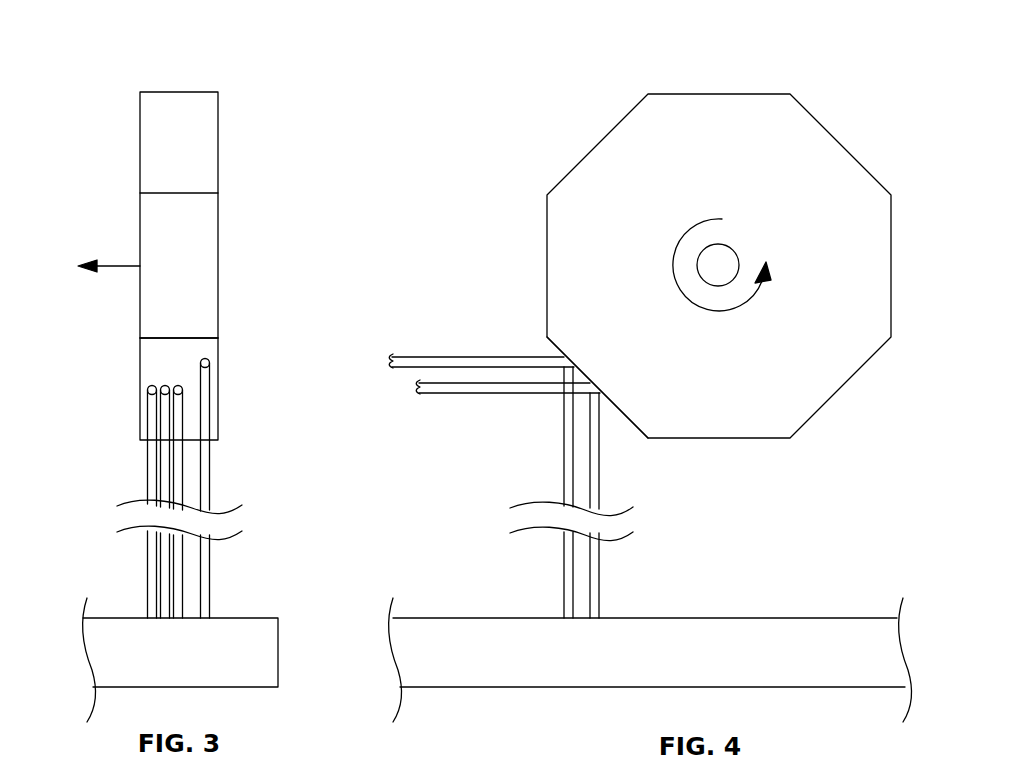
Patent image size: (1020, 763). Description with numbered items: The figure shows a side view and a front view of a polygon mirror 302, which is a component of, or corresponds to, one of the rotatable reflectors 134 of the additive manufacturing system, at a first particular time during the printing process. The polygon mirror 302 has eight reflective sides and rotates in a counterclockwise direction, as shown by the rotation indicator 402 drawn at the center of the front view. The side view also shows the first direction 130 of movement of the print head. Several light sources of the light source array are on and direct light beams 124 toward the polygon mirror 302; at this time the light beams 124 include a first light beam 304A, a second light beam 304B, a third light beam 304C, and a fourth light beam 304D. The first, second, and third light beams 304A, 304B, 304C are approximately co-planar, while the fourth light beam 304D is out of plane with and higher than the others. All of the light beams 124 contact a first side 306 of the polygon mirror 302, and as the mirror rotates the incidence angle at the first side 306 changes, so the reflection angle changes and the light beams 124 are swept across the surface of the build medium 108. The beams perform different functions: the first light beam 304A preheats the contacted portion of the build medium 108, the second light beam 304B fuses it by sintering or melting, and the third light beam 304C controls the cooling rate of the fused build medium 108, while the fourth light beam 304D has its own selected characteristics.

In FIG. 3, the rotatable reflector 134 is at (252, 62).
In FIG. 4, the rotatable reflector 134 is at (802, 56).
In FIG. 3, the polygon mirror 302 is at (179, 266).
In FIG. 4, the polygon mirror 302 is at (719, 266).
In FIG. 3, the first direction 130 is at (115, 264).
In FIG. 3, the first side 306 is at (195, 350).
In FIG. 4, the first side 306 is at (623, 413).
In FIG. 3, the first light beam 304A is at (155, 477).
In FIG. 3, the second light beam 304B is at (165, 455).
In FIG. 3, the third light beam 304C is at (180, 462).
In FIG. 4, the third light beam 304C is at (545, 393).
In FIG. 3, the fourth light beam 304D is at (205, 500).
In FIG. 4, the fourth light beam 304D is at (505, 485).
In FIG. 3, the light beams 124 is at (98, 564).
In FIG. 4, the light beams 124 is at (712, 575).
In FIG. 3, the build medium 108 is at (180, 660).
In FIG. 4, the build medium 108 is at (650, 660).
In FIG. 4, the rotation indicator 402 is at (681, 245).